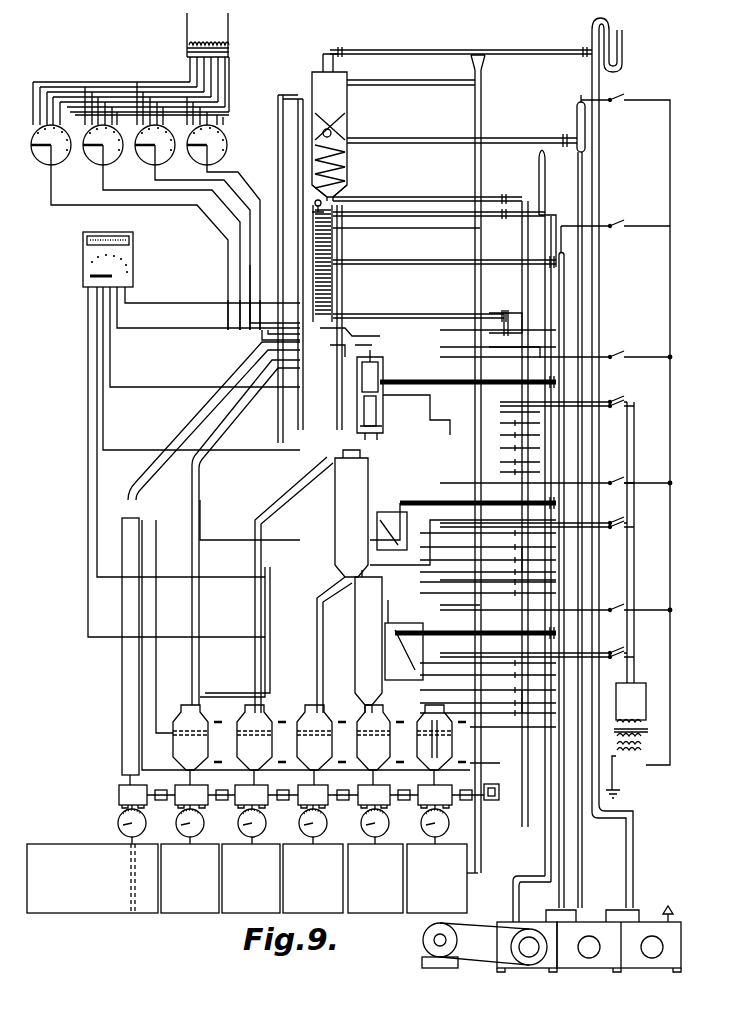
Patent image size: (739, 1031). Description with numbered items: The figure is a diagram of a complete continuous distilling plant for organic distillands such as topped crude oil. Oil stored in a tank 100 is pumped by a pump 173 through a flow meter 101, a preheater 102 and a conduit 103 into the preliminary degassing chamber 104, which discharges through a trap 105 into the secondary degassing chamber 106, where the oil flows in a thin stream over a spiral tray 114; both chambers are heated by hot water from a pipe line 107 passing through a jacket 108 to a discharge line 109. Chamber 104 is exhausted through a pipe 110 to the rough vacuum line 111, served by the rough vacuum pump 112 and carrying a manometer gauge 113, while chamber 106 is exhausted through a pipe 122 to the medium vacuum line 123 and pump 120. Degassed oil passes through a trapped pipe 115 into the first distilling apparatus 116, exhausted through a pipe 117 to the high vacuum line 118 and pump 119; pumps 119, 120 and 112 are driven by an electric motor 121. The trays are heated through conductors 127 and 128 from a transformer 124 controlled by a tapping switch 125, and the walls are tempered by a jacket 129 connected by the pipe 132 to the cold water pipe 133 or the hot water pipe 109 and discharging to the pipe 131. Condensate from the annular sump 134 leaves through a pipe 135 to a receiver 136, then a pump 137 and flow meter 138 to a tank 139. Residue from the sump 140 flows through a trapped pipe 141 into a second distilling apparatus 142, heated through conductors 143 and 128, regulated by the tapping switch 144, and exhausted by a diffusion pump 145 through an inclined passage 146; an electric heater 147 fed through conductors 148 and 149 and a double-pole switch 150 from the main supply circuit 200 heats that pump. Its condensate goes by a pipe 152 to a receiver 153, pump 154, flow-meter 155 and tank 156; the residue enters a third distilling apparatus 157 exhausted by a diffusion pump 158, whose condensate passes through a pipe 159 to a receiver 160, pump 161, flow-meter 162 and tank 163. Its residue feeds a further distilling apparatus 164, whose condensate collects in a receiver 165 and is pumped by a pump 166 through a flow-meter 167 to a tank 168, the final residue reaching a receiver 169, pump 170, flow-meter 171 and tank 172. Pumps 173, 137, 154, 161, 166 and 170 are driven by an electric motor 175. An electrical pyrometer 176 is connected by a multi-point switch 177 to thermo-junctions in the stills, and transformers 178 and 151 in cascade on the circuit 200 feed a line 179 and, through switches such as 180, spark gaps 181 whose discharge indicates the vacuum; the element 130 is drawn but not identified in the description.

The tank 100 is at (108, 895).
The flow meter 101 is at (121, 825).
The preheater 102 is at (124, 664).
The conduit 103 is at (178, 444).
The preliminary degassing chamber 104 is at (320, 62).
The trap 105 is at (348, 126).
The secondary degassing chamber 106 is at (348, 154).
The hot water pipe line 107 is at (486, 90).
The jacket 108 is at (348, 100).
The discharge line 109 is at (514, 197).
The pipe 110 is at (430, 54).
The rough vacuum line 111 is at (592, 62).
The rough vacuum pump 112 is at (658, 914).
The manometer gauge 113 is at (623, 52).
The spiral plate or tray 114 is at (348, 180).
The trapped pipe 115 is at (334, 214).
The first distilling apparatus 116 is at (334, 244).
The pipe 117 is at (546, 230).
The high vacuum line 118 is at (570, 294).
The pump 119 is at (540, 968).
The pump 120 is at (586, 968).
The electric motor 121 is at (445, 962).
The pipe 122 is at (524, 136).
The medium vacuum line 123 is at (590, 148).
The transformer 124 is at (227, 42).
The tapping switch 125 is at (222, 152).
The conductor 127 is at (302, 190).
The conductor 128 is at (272, 82).
The jacket 129 is at (336, 276).
The pipe 130 is at (406, 233).
The pipe 131 is at (546, 176).
The pipe 132 is at (432, 314).
The cold water pipe 133 is at (514, 312).
The annular sump 134 is at (260, 288).
The pipe 135 is at (218, 432).
The receiver 136 is at (190, 745).
The pump 137 is at (204, 812).
The flow meter 138 is at (175, 878).
The tank 139 is at (198, 901).
The sump 140 is at (338, 300).
The trapped pipe 141 is at (356, 328).
The second distilling apparatus 142 is at (356, 350).
The conductor 143 is at (228, 222).
The tapping switch 144 is at (160, 163).
The diffusion pump 145 is at (385, 372).
The inclined passage 146 is at (388, 350).
The electric heater 147 is at (376, 424).
The conductor 148 is at (428, 402).
The conductor 149 is at (438, 424).
The double-pole switch 150 is at (622, 398).
The transformer 151 is at (648, 700).
The pipe 152 is at (244, 552).
The receiver 153 is at (254, 745).
The pump 154 is at (266, 812).
The flow-meter 155 is at (236, 862).
The tank 156 is at (258, 901).
The third distilling apparatus 157 is at (330, 470).
The diffusion pump 158 is at (380, 520).
The pipe 159 is at (312, 610).
The receiver 160 is at (314, 745).
The pump 161 is at (327, 812).
The flow-meter 162 is at (297, 862).
The tank 163 is at (318, 901).
The distilling apparatus 164 is at (360, 597).
The receiver 165 is at (373, 745).
The pump 166 is at (389, 812).
The flow-meter 167 is at (360, 862).
The tank 168 is at (381, 901).
The receiver 169 is at (454, 744).
The pump 170 is at (452, 812).
The flow-meter 171 is at (422, 862).
The tank 172 is at (476, 872).
The pump 173 is at (146, 815).
The electric motor 175 is at (470, 762).
The electrical pyrometer 176 is at (133, 240).
The multi-point switch 177 is at (133, 270).
The transformer 178 is at (646, 758).
The line 179 is at (660, 418).
The switch 180 is at (614, 98).
The spark gap 181 is at (577, 104).
The main supply circuit 200 is at (630, 552).